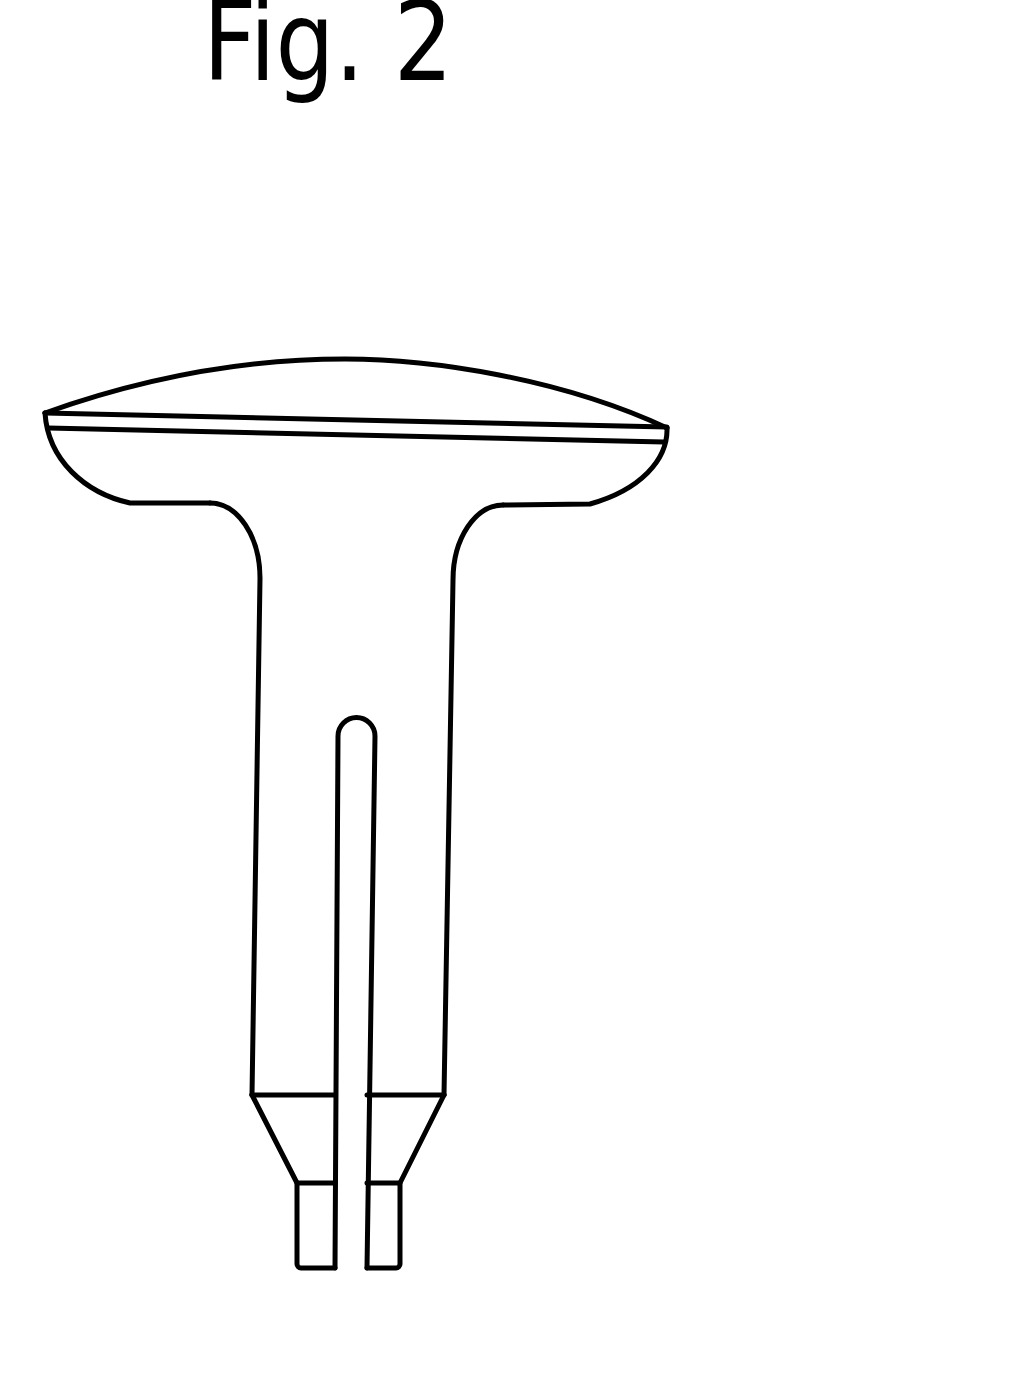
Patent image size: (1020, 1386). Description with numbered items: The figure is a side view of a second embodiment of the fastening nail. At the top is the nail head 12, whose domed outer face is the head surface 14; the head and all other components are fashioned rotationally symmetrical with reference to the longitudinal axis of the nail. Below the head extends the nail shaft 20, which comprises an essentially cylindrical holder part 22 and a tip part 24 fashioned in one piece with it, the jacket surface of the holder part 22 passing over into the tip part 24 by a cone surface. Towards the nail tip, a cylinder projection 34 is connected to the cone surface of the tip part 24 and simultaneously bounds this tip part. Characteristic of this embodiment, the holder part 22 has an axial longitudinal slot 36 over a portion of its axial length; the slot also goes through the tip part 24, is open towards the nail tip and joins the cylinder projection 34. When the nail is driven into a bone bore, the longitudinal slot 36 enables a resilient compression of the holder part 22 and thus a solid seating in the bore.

The nail head 12 is at (752, 419).
The head surface 14 is at (470, 367).
The nail shaft 20 is at (500, 885).
The holder part 22 is at (423, 951).
The tip part 24 is at (496, 1224).
The cylinder projection 34 is at (387, 1243).
The axial longitudinal slot 36 is at (357, 1017).